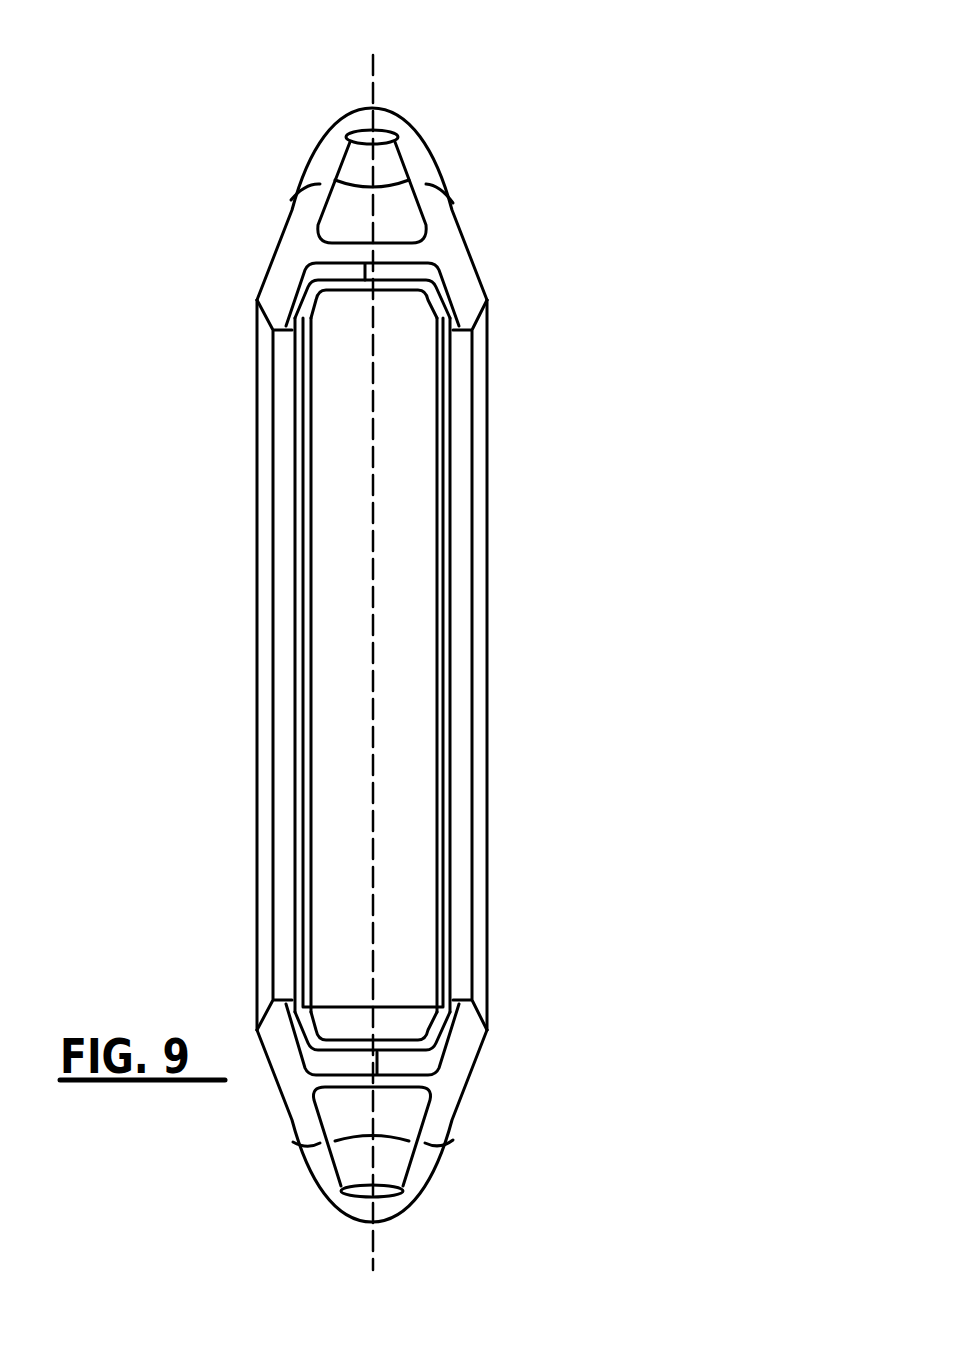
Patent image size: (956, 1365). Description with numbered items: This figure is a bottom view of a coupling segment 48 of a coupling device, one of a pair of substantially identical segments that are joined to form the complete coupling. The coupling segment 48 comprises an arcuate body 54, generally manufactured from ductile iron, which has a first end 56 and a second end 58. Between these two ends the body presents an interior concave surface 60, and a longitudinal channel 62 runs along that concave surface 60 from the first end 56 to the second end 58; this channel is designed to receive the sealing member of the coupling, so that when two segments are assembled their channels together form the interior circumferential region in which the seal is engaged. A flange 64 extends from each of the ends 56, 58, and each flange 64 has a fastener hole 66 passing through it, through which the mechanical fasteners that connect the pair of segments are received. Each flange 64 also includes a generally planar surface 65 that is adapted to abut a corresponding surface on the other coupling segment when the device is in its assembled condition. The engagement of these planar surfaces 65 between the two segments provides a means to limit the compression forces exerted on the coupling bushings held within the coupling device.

The coupling segment 48 is at (570, 532).
The arcuate body 54 is at (265, 598).
The first end 56 is at (447, 212).
The second end 58 is at (443, 1118).
The interior concave surface 60 is at (470, 395).
The longitudinal channel 62 is at (417, 790).
The flange 64 is at (378, 108).
The generally planar surface 65 is at (467, 293).
The fastener hole 66 is at (393, 163).